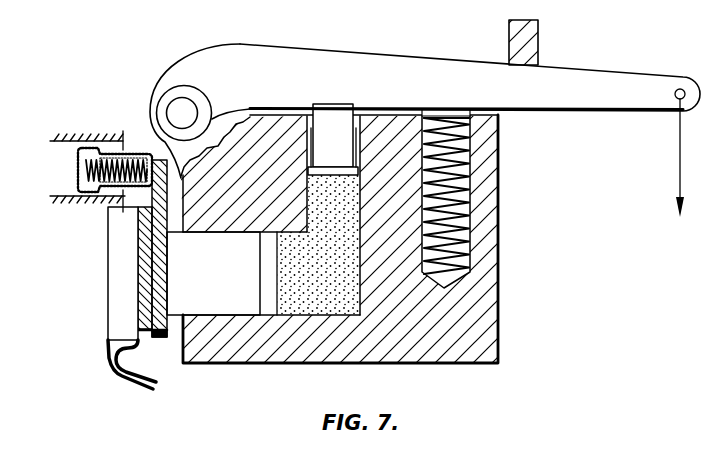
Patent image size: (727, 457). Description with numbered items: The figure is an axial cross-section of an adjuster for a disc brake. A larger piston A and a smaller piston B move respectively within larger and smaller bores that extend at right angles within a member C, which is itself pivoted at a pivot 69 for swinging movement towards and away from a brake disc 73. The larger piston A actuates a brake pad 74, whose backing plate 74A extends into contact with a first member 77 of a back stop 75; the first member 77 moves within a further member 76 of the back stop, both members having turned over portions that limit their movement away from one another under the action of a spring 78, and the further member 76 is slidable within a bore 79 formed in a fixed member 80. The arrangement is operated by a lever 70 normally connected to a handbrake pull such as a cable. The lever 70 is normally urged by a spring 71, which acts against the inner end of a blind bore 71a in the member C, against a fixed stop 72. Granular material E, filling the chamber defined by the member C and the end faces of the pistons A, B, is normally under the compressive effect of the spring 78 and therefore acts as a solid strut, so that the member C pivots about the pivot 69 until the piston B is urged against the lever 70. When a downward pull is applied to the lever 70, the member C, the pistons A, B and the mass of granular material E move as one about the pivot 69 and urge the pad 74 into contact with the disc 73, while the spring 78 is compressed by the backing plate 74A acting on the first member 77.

The pivot 69 is at (188, 111).
The lever 70 is at (623, 85).
The spring 71 is at (467, 219).
The blind bore 71a is at (466, 161).
The fixed stop 72 is at (530, 44).
The brake disc 73 is at (118, 302).
The brake pad 74 is at (147, 320).
The backing plate 74A is at (159, 334).
The back stop 75 is at (110, 132).
The further member 76 is at (80, 172).
The first member 77 is at (143, 160).
The spring 78 is at (113, 181).
The bore 79 is at (67, 153).
The fixed member 80 is at (65, 205).
The larger piston A is at (221, 277).
The smaller piston B is at (344, 138).
The member C is at (269, 160).
The granular material E is at (307, 371).